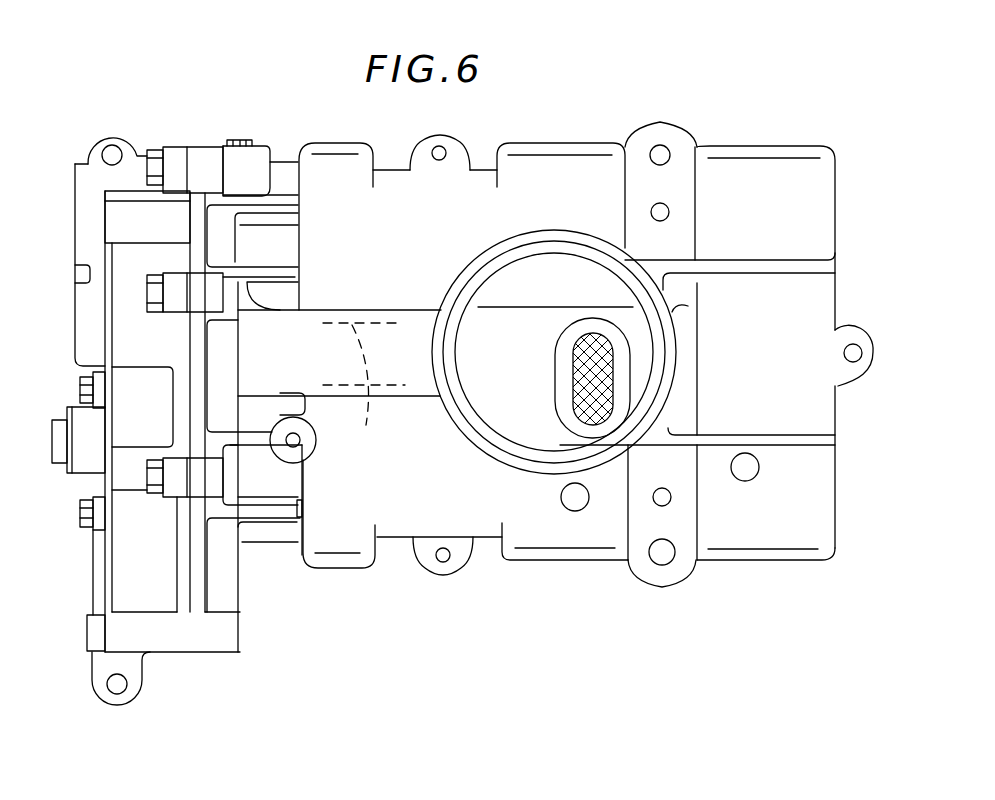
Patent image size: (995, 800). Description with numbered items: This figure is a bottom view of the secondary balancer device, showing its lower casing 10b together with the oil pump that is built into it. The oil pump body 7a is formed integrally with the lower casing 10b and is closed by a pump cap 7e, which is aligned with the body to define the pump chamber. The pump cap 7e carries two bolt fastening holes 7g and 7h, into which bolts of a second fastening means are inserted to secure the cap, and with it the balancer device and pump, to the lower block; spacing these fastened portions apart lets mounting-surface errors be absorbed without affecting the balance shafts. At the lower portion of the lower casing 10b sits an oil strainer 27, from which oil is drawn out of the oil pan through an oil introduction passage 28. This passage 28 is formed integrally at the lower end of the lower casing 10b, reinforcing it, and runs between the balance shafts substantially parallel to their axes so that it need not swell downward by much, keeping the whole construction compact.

The lower casing 10b is at (766, 174).
The oil pump body 7a is at (248, 558).
The pump cap 7e is at (84, 165).
The bolt fastening hole 7g is at (117, 146).
The bolt fastening hole 7h is at (122, 690).
The oil strainer 27 is at (577, 348).
The oil introduction passage 28 is at (364, 384).